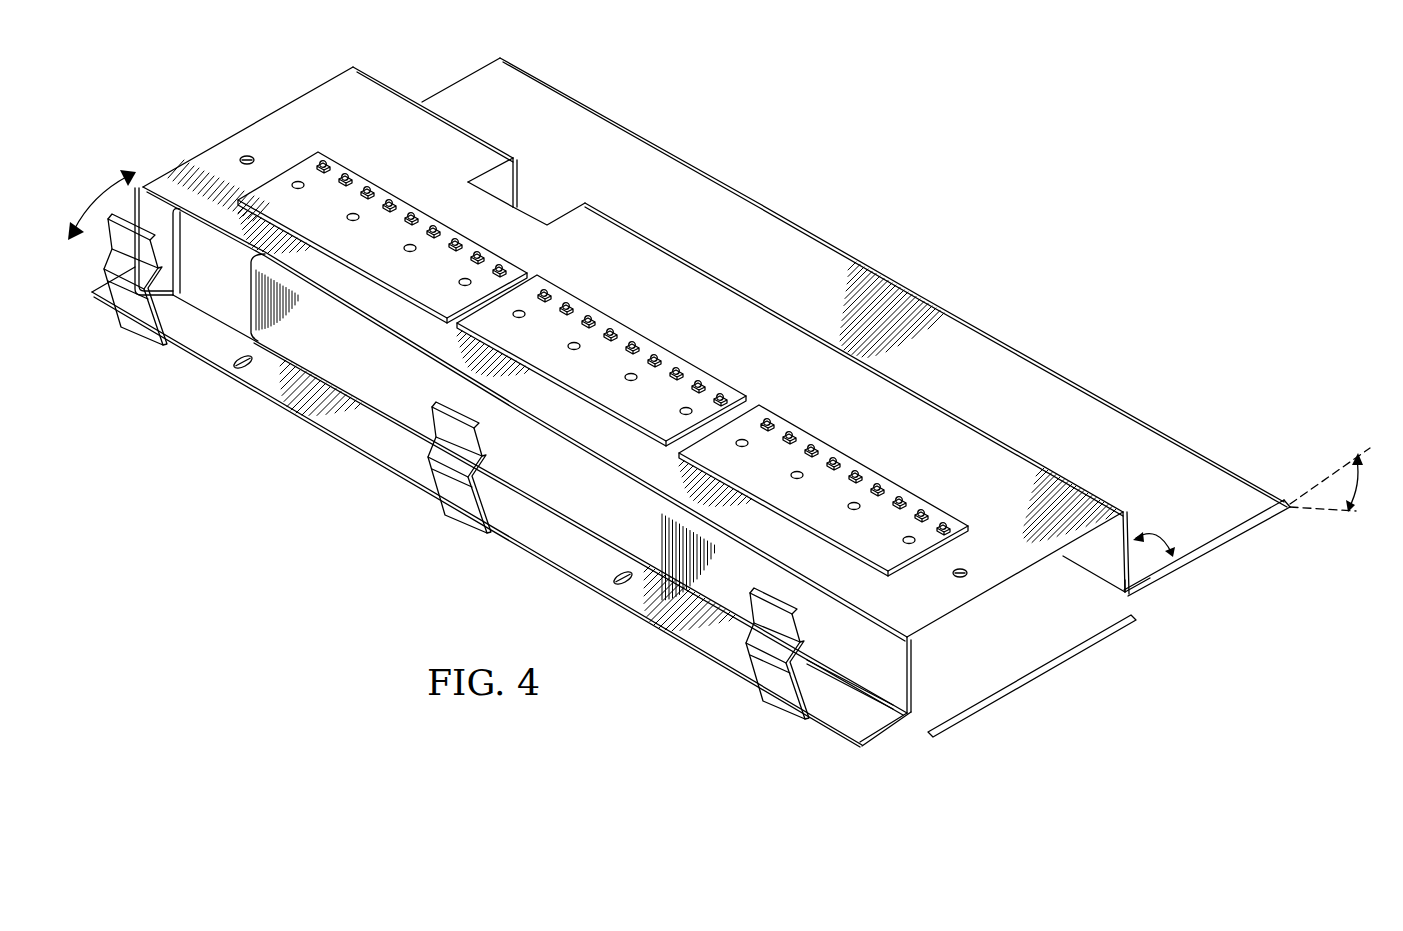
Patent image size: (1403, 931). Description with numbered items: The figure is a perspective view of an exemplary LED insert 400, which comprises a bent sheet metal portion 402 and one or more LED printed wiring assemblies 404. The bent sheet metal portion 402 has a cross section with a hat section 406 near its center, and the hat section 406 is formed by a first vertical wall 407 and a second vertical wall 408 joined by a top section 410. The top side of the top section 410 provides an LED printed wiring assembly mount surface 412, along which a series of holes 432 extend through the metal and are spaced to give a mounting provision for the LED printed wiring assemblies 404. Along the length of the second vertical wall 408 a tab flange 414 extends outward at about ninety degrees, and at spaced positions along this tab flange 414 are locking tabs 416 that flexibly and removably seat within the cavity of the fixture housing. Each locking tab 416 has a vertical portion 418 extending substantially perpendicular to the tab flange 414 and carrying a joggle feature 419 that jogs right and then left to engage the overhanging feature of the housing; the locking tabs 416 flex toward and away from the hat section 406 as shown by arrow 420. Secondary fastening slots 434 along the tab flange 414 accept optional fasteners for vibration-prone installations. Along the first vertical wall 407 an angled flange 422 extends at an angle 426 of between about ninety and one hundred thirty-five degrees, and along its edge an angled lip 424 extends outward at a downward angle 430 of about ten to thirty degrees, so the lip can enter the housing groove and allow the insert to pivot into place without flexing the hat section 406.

The LED insert 400 is at (866, 82).
The bent sheet metal portion 402 is at (297, 110).
The LED printed wiring assembly 404 is at (360, 180).
The hat section 406 is at (1036, 676).
The first vertical wall 407 is at (1128, 560).
The second vertical wall 408 is at (892, 677).
The top section 410 is at (942, 603).
The LED printed wiring assembly mount surface 412 is at (938, 422).
The tab flange 414 is at (867, 722).
The locking tabs 416 is at (440, 478).
The vertical portion 418 is at (827, 693).
The joggle feature 419 is at (803, 658).
The arrow 420 is at (82, 213).
The angled flange 422 is at (1142, 442).
The angled lip 424 is at (1247, 483).
The angle 426 is at (1156, 531).
The downward angle 430 is at (1358, 489).
The holes 432 is at (963, 560).
The secondary fastening slots 434 is at (617, 575).